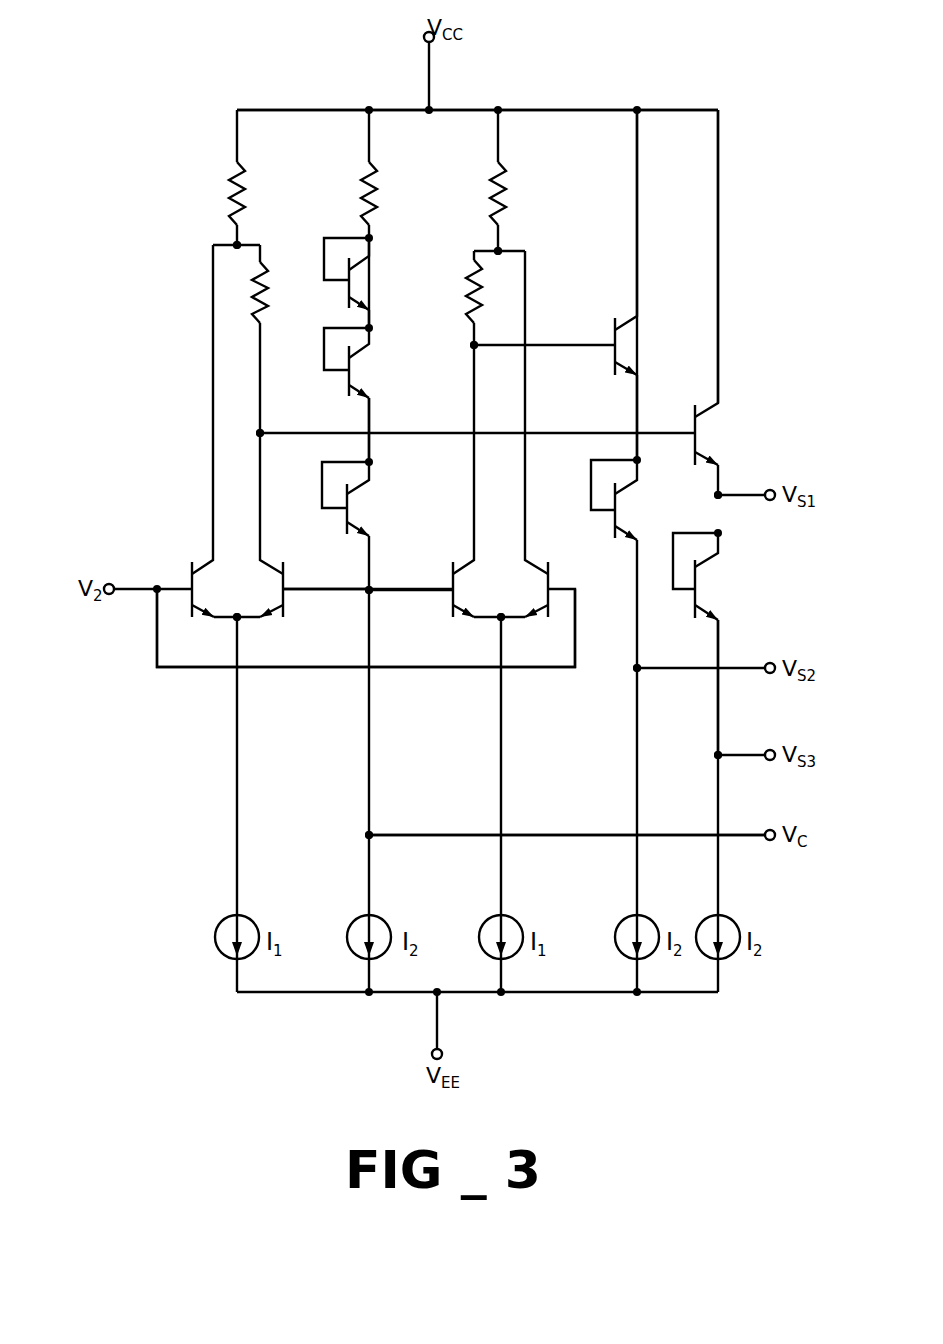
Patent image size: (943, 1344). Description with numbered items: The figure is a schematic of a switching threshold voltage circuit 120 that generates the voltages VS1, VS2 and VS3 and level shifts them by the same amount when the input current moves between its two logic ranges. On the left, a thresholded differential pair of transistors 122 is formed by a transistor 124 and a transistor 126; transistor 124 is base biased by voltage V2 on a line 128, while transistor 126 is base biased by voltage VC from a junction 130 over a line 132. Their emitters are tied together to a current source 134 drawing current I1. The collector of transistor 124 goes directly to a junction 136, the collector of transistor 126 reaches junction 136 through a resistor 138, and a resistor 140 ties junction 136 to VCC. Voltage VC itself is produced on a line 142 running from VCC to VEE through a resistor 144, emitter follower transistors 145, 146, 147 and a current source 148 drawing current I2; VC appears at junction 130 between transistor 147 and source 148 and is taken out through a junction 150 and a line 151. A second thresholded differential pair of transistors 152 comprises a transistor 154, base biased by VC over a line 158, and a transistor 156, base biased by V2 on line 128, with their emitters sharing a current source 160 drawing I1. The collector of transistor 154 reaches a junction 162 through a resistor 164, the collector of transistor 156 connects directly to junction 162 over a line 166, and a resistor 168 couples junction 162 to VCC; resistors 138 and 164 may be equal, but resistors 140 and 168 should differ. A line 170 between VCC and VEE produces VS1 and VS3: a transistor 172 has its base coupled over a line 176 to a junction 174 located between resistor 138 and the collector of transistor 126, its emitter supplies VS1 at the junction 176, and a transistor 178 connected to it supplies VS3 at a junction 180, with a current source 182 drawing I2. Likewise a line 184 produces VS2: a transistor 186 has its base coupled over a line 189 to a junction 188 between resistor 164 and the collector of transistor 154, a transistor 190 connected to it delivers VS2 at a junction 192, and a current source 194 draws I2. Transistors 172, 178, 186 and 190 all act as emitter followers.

The circuit 120 is at (624, 73).
The thresholded differential pair of transistors 122 is at (237, 565).
The transistor 124 is at (200, 557).
The transistor 126 is at (267, 557).
The line 128 is at (130, 582).
The junction 130 is at (373, 592).
The line 132 is at (323, 597).
The current source 134 is at (257, 920).
The junction 136 is at (236, 244).
The resistor 138 is at (268, 283).
The resistor 140 is at (237, 188).
The line 142 is at (396, 187).
The resistor 144 is at (360, 187).
The emitter follower transistor 145 is at (377, 284).
The emitter follower transistor 146 is at (365, 374).
The emitter follower transistor 147 is at (365, 508).
The current source 148 is at (388, 920).
The junction 150 is at (375, 832).
The line 151 is at (592, 835).
The thresholded differential pair of transistors 152 is at (500, 558).
The transistor 154 is at (458, 556).
The transistor 156 is at (538, 562).
The line 158 is at (408, 586).
The current source 160 is at (520, 920).
The junction 162 is at (492, 250).
The resistor 164 is at (468, 306).
The line 166 is at (526, 286).
The resistor 168 is at (503, 180).
The line 170 is at (749, 250).
The transistor 172 is at (718, 432).
The junction 174 is at (264, 431).
The line / junction 176 is at (545, 434).
The transistor 178 is at (710, 590).
The junction 180 is at (720, 753).
The current source 182 is at (735, 920).
The line 184 is at (658, 262).
The transistor 186 is at (638, 346).
The junction 188 is at (472, 350).
The line 189 is at (553, 343).
The transistor 190 is at (633, 511).
The junction 192 is at (640, 670).
The current source 194 is at (655, 920).